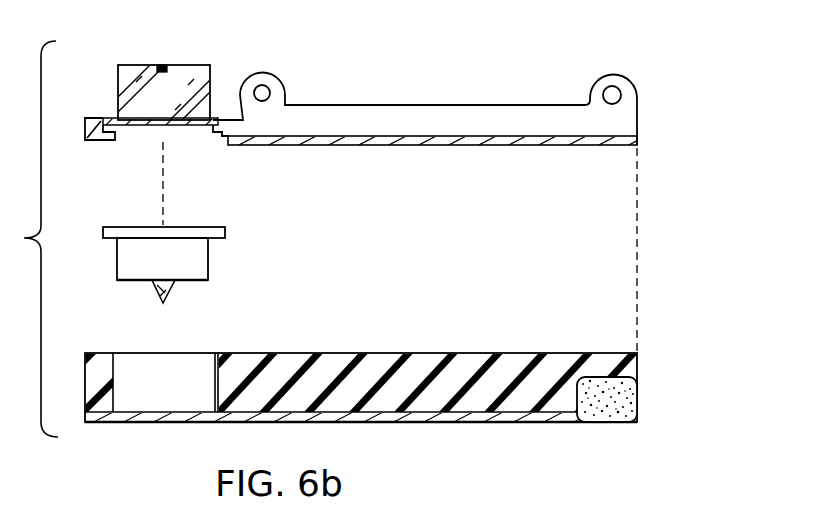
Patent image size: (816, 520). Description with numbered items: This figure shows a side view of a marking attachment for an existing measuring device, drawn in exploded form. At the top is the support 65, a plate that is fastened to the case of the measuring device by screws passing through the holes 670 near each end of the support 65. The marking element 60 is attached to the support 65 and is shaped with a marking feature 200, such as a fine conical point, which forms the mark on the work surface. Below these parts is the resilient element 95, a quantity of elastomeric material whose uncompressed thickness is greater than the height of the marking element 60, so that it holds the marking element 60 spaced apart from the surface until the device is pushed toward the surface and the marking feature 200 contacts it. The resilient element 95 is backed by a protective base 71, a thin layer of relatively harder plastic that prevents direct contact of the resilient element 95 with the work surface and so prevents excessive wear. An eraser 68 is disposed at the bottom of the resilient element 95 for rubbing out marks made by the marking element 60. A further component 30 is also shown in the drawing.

The printhead die / chip 30 is at (163, 66).
The holes 670 is at (262, 85).
The support 65 is at (393, 105).
The marking element 60 is at (177, 265).
The marking feature 200 is at (163, 303).
The resilient element 95 is at (470, 365).
The protective base 71 is at (379, 423).
The eraser 68 is at (640, 416).